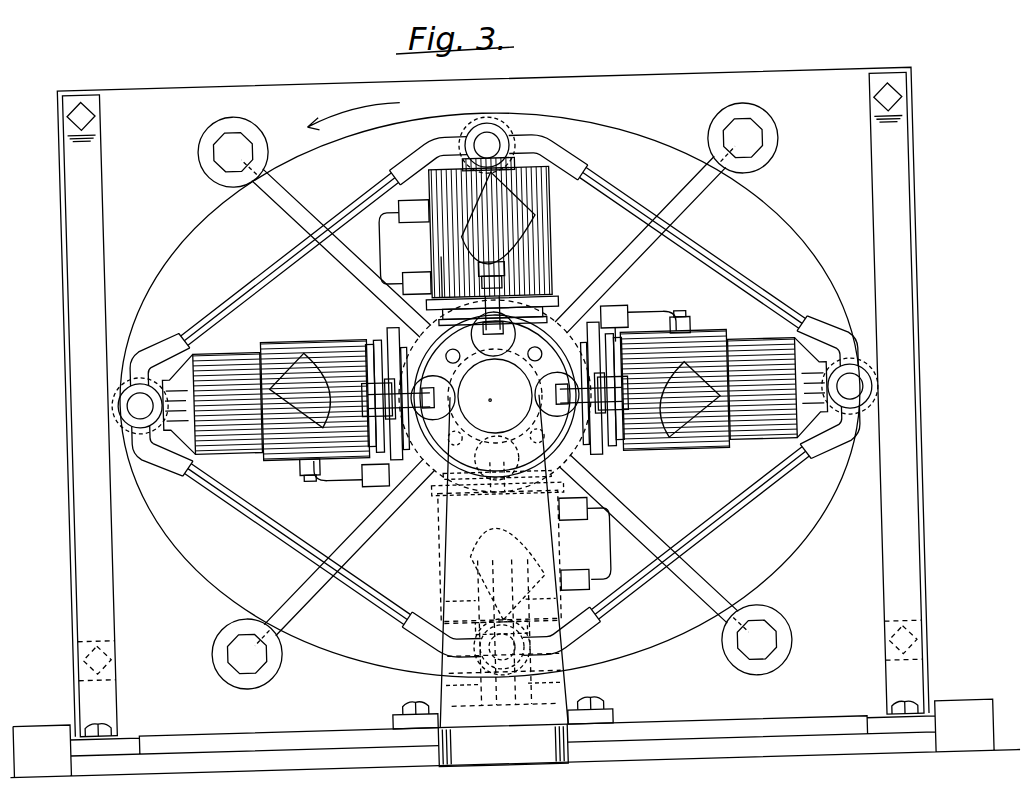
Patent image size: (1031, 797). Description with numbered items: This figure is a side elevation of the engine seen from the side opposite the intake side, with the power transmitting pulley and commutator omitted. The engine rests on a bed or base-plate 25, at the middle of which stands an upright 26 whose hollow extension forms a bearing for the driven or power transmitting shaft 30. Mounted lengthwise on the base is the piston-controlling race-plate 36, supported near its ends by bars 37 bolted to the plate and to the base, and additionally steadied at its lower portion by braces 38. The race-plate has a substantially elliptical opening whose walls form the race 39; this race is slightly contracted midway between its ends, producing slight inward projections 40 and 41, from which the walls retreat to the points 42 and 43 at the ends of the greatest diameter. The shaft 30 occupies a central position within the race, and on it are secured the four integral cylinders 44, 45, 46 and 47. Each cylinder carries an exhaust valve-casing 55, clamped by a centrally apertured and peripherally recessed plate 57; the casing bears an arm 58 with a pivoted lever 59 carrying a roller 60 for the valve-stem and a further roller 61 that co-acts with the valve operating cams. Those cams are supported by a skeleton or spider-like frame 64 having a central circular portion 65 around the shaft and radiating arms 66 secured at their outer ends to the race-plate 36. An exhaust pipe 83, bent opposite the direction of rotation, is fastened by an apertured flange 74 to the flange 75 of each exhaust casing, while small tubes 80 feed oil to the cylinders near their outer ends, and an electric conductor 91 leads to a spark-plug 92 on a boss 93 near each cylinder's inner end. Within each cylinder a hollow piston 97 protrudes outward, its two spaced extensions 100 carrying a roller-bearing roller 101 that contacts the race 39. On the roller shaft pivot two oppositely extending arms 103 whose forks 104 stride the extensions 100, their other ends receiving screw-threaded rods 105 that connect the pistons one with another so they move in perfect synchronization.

The bed or base-plate 25 is at (514, 732).
The upright 26 is at (580, 687).
The driven or power transmitting shaft 30 is at (495, 396).
The piston-controlling race-plate 36 is at (181, 79).
The bars 37 is at (878, 212).
The braces 38 is at (104, 630).
The race 39 is at (192, 236).
The inward projection 40 is at (505, 668).
The inward projection 41 is at (490, 127).
The point 42 is at (865, 387).
The point 43 is at (118, 395).
The cylinder 44 is at (491, 231).
The cylinder 45 is at (268, 452).
The cylinder 46 is at (440, 566).
The cylinder 47 is at (718, 452).
The exhaust valve-casing 55 is at (455, 345).
The centrally apertured and peripherally recessed plate 57 is at (520, 350).
The arm 58 is at (486, 268).
The lever 59 is at (495, 268).
The roller 60 is at (490, 350).
The roller 61 is at (368, 412).
The skeleton or spider-like frame 64 is at (612, 448).
The central circular portion 65 is at (378, 340).
The arm 66 is at (332, 247).
The apertured flange 74 is at (546, 258).
The flange 75 is at (453, 265).
The small tube 80 is at (386, 236).
The exhaust pipe 83 is at (545, 216).
The electric conductor 91 is at (560, 268).
The spark-plug 92 is at (568, 573).
The boss 93 is at (588, 275).
The piston 97 is at (495, 396).
The extension 100 is at (518, 168).
The roller-bearing roller 101 is at (512, 132).
The arm 103 is at (438, 175).
The fork 104 is at (490, 132).
The rod 105 is at (620, 194).